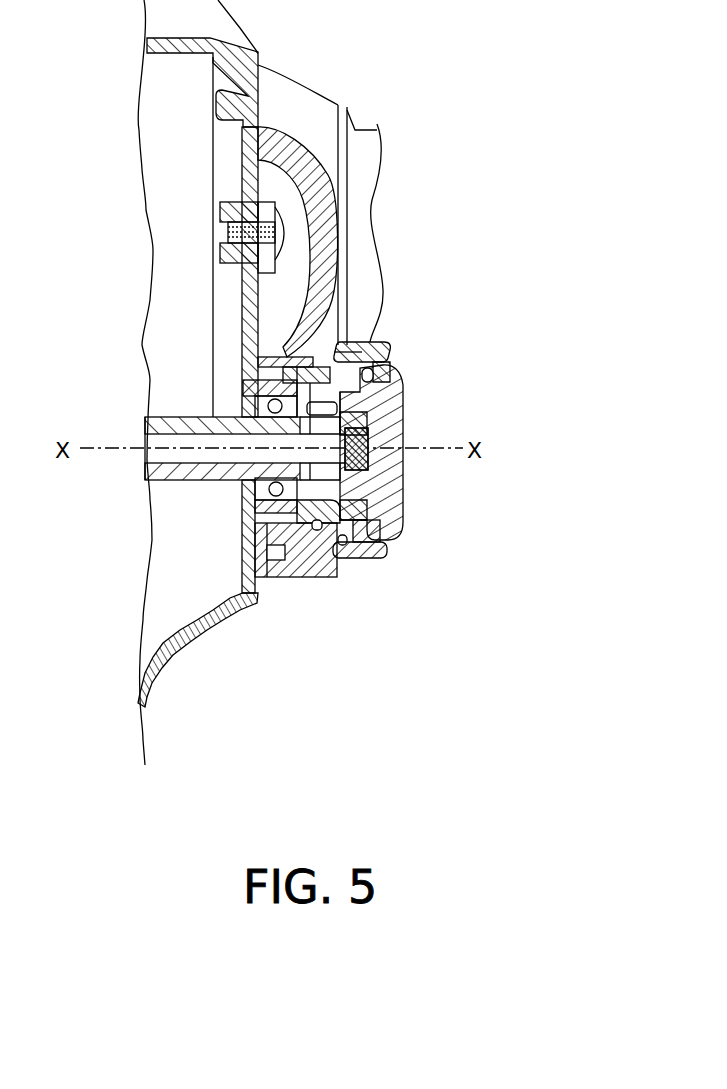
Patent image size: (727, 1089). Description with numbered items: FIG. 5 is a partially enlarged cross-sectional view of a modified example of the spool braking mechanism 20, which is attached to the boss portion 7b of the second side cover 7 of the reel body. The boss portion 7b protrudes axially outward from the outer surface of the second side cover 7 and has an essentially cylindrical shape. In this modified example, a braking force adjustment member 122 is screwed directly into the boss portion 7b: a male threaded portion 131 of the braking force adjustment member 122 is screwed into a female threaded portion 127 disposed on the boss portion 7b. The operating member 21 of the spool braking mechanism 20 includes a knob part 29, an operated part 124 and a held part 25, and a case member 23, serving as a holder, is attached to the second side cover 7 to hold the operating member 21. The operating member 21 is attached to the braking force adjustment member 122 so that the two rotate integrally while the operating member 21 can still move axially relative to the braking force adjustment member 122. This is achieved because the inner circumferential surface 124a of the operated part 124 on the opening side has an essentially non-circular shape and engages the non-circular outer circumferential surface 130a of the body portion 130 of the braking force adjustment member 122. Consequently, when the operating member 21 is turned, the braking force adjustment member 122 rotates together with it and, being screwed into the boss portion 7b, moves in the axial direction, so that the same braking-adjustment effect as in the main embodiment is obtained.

The second side cover 7 is at (243, 362).
The boss portion 7b is at (290, 347).
The case member 23 is at (303, 197).
The male threaded portion 131 is at (335, 372).
The spool braking mechanism 20 is at (455, 345).
The braking force adjustment member 122 is at (410, 387).
The female threaded portion 127 is at (380, 402).
The body portion 130 is at (403, 433).
The inner circumferential surface 124a is at (370, 490).
The outer circumferential surface 130a is at (403, 517).
The held part 25 is at (270, 562).
The operated part 124 is at (312, 548).
The knob part 29 is at (356, 558).
The operating member 21 is at (395, 648).